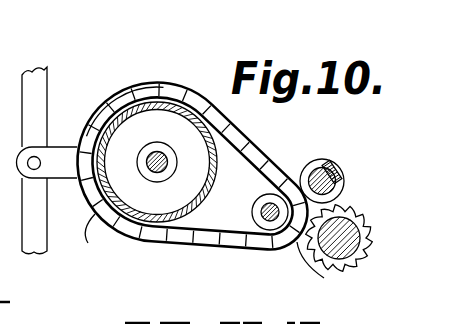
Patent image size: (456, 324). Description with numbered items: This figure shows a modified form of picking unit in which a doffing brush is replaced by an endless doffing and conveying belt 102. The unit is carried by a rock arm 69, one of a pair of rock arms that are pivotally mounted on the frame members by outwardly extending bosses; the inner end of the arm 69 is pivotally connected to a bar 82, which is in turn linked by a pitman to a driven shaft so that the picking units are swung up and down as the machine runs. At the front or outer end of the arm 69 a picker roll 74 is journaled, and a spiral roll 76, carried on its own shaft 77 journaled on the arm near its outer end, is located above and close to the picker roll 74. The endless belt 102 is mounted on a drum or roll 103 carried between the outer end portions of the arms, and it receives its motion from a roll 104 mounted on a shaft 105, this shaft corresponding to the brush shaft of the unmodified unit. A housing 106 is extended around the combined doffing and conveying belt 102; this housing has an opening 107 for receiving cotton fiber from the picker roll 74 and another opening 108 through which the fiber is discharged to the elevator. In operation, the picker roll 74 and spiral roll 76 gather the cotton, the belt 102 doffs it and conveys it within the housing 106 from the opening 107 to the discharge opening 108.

The bar 82 is at (42, 118).
The housing 106 is at (155, 65).
The endless doffing and conveying belt 102 is at (290, 143).
The drum or roll 103 is at (252, 198).
The roll 104 is at (288, 288).
The shaft 105 is at (340, 151).
The spiral roll 76 is at (338, 163).
The shaft 77 is at (345, 182).
The picker roll 74 is at (422, 219).
The opening 108 is at (118, 269).
The rock arm 69 is at (227, 215).
The opening 107 is at (366, 303).